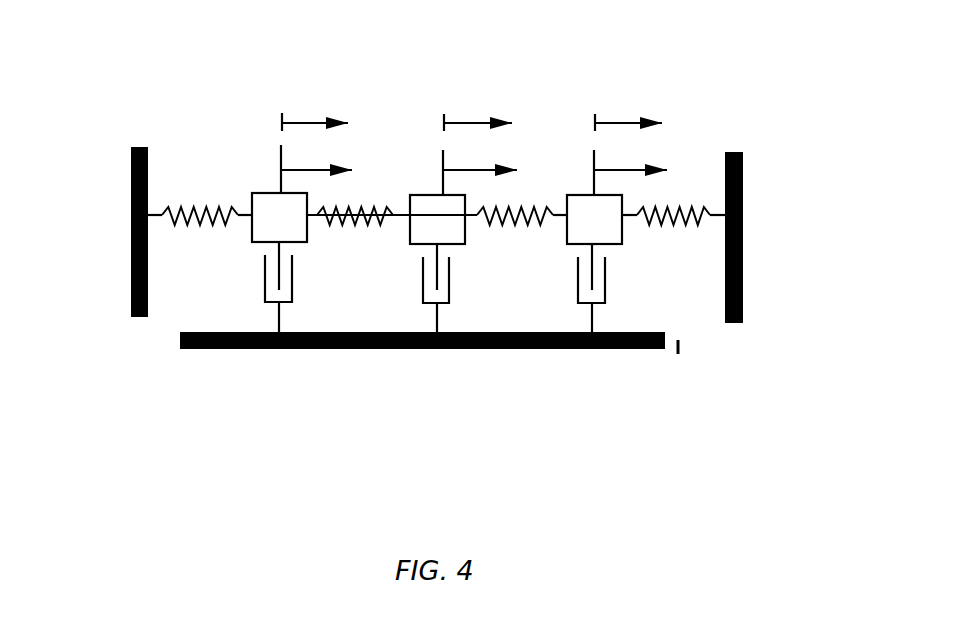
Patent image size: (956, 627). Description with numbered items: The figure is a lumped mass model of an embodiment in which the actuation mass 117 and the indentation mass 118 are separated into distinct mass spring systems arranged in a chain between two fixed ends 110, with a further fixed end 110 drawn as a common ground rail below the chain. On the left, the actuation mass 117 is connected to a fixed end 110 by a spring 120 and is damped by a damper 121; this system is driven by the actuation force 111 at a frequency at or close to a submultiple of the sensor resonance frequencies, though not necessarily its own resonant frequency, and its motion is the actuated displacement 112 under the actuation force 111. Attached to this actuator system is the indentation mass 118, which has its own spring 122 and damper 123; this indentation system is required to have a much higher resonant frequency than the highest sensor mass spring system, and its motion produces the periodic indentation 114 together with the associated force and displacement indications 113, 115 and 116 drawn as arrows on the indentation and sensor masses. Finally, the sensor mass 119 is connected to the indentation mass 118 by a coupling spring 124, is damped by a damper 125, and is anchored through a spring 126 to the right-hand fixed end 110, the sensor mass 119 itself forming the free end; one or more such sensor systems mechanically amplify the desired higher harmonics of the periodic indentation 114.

The fixed end 110 is at (138, 145).
The actuation force 111 is at (272, 163).
The actuated displacement 112 is at (317, 118).
The second lower force arrow 113 is at (435, 170).
The periodic indentation 114 is at (472, 118).
The third lower force arrow 115 is at (587, 170).
The third upper force arrow 116 is at (625, 118).
The actuation mass 117 is at (279, 217).
The indentation mass 118 is at (437, 219).
The sensor mass 119 is at (594, 219).
The spring 120 is at (200, 230).
The damper 121 is at (291, 287).
The spring 122 is at (357, 230).
The damper 123 is at (449, 287).
The coupling spring 124 is at (518, 230).
The damper 125 is at (605, 287).
The spring 126 is at (673, 230).